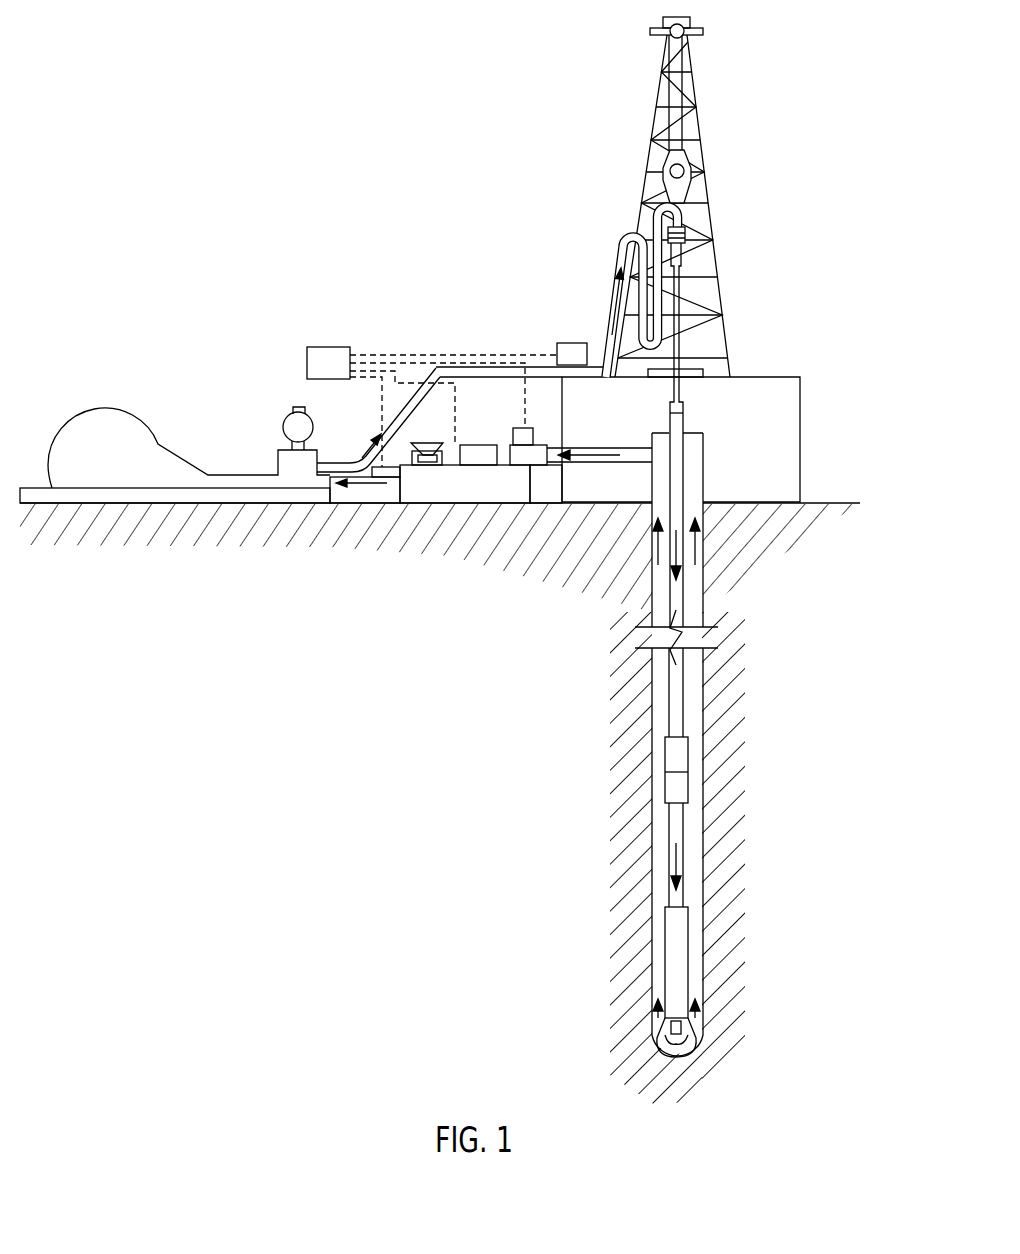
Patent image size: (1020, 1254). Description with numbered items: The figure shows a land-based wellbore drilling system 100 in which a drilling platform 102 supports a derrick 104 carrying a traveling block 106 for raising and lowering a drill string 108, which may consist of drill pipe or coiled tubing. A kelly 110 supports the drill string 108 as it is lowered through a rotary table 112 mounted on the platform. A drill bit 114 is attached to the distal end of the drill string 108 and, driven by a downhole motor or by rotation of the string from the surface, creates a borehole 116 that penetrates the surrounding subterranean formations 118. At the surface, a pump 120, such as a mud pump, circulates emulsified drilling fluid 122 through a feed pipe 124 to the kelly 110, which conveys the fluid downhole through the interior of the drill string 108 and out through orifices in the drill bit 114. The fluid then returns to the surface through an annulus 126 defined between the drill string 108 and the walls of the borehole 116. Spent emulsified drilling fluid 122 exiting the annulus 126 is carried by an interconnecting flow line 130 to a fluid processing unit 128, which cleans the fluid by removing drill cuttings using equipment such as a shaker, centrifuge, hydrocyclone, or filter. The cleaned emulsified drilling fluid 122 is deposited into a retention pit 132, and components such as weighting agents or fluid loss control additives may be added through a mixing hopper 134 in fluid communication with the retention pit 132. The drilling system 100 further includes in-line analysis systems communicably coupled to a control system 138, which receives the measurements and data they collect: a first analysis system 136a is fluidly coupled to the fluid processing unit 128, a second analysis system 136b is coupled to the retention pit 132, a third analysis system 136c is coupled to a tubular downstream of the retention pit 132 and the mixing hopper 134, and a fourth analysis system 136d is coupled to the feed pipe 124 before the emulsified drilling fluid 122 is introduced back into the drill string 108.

The wellbore drilling system 100 is at (397, 97).
The drilling platform 102 is at (802, 390).
The derrick 104 is at (705, 118).
The traveling block 106 is at (690, 168).
The drill string 108 is at (672, 610).
The kelly 110 is at (688, 300).
The rotary table 112 is at (705, 372).
The drill bit 114 is at (700, 1028).
The borehole 116 is at (704, 702).
The subterranean formations 118 is at (541, 732).
The pump 120 is at (118, 468).
The emulsified drilling fluid 122 is at (340, 463).
The feed pipe 124 is at (435, 368).
The annulus 126 is at (692, 858).
The fluid processing unit 128 is at (540, 445).
The flow line 130 is at (635, 463).
The retention pit 132 is at (480, 494).
The mixing hopper 134 is at (428, 456).
The first analysis system 136a is at (523, 428).
The second analysis system 136b is at (480, 445).
The third analysis system 136c is at (387, 467).
The fourth analysis system 136d is at (572, 343).
The control system 138 is at (330, 347).